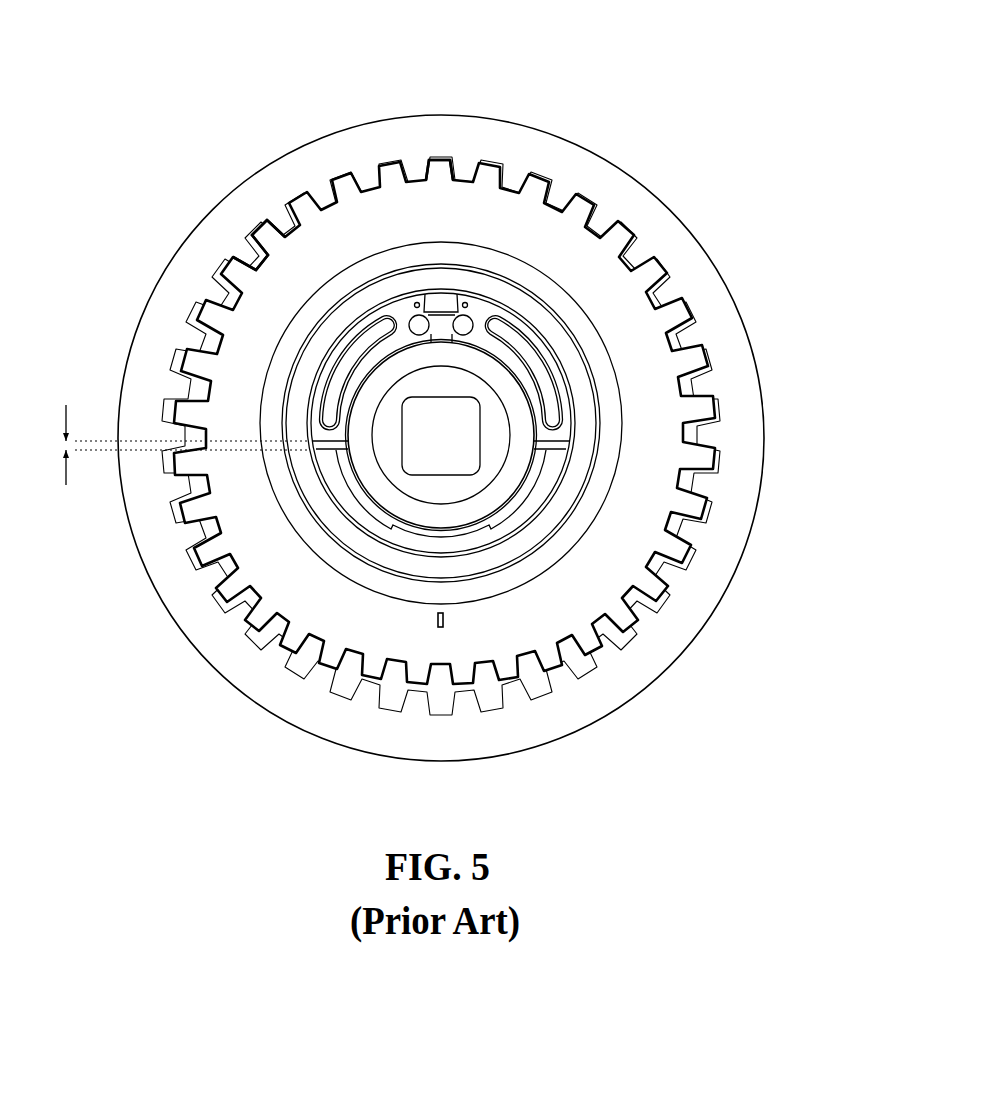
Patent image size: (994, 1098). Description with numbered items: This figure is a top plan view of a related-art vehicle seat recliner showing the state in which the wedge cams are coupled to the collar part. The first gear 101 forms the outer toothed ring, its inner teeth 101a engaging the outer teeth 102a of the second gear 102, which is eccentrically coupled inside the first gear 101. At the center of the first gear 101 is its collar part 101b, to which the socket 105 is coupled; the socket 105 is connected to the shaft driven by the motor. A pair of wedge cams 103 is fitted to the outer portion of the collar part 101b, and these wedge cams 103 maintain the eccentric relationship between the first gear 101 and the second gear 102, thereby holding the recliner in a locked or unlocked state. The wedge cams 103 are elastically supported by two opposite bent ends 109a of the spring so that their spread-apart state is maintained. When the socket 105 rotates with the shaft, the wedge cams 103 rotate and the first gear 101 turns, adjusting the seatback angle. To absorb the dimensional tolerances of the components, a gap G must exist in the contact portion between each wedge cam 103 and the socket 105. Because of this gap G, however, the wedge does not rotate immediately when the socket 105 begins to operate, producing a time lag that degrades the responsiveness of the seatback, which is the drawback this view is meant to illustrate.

The first gear 101 is at (493, 135).
The inner teeth 101a is at (447, 207).
The collar part 101b is at (498, 492).
The second gear 102 is at (258, 541).
The outer teeth 102a is at (253, 228).
The wedge cam 103 is at (534, 352).
The socket 105 is at (490, 450).
The bent end 109a is at (466, 318).
The gap G is at (173, 445).